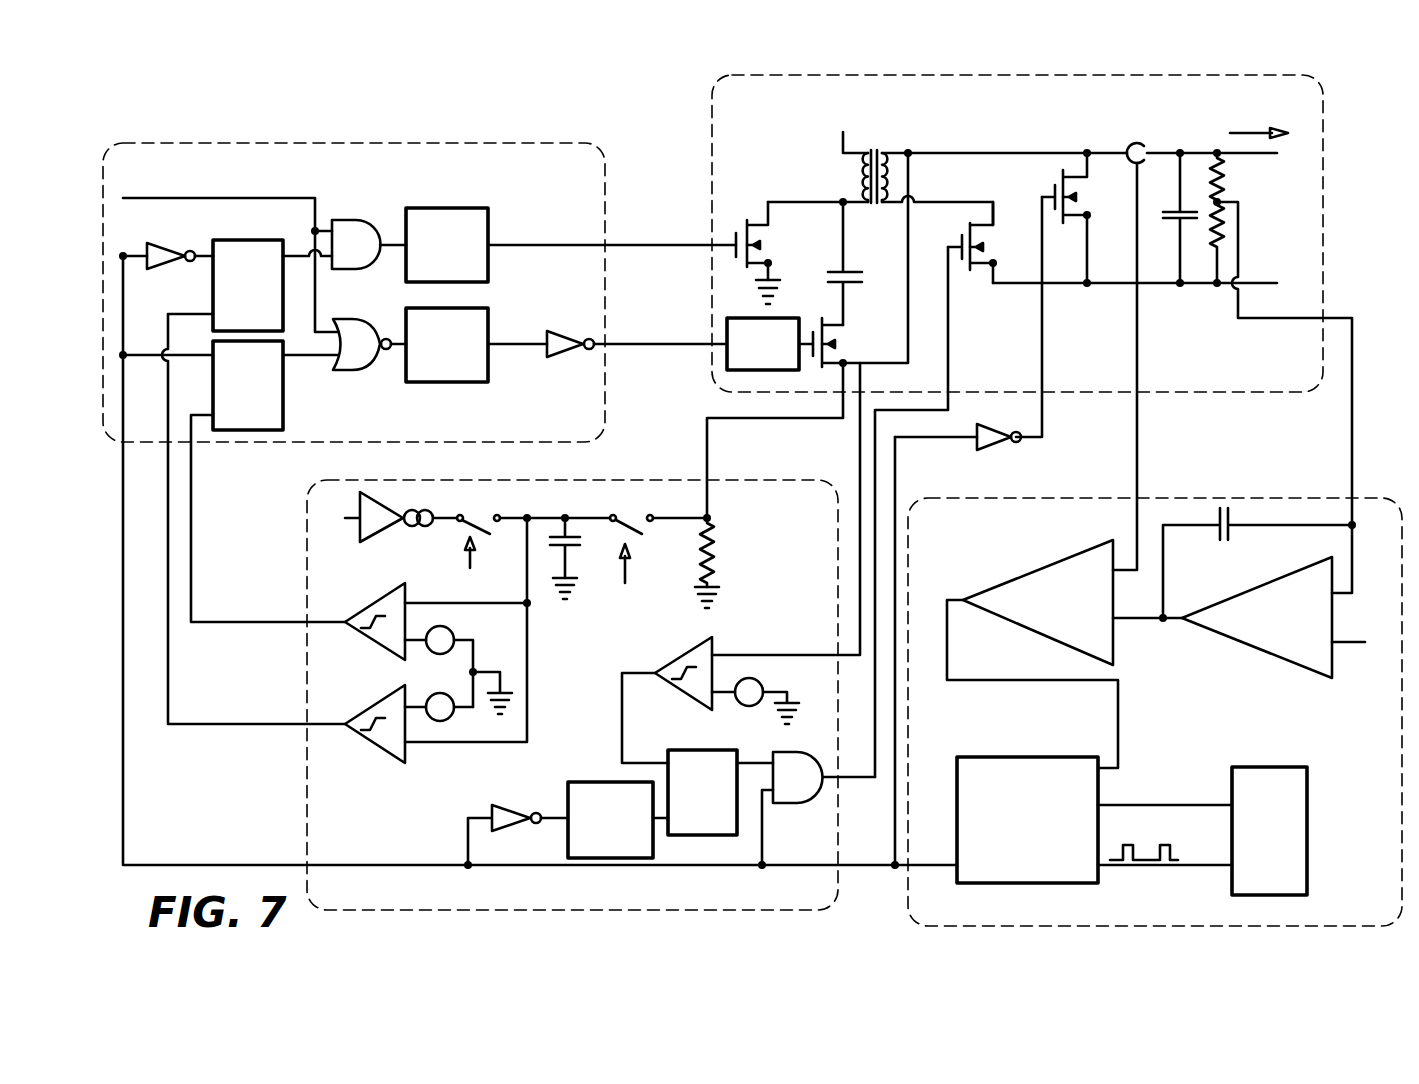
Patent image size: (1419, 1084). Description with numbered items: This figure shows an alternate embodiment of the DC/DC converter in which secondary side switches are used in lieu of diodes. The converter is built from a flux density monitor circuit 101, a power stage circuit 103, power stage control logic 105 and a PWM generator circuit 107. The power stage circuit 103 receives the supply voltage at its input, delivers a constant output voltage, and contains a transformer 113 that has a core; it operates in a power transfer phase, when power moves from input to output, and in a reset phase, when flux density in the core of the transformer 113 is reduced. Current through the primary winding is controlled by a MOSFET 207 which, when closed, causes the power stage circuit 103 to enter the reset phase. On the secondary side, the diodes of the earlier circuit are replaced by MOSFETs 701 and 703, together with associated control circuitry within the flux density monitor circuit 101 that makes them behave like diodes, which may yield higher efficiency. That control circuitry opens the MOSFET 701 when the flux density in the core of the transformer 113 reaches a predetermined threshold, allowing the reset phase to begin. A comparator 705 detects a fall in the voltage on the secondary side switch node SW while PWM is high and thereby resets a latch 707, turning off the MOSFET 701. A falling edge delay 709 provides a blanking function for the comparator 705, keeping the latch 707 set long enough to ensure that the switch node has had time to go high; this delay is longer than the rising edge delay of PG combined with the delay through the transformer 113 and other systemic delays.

The flux density monitor circuit 101 is at (684, 480).
The power stage circuit 103 is at (1270, 393).
The power stage control logic 105 is at (317, 444).
The PWM generator circuit 107 is at (1262, 498).
The transformer 113 is at (875, 153).
The MOSFET 207 is at (845, 360).
The MOSFET 701 is at (981, 268).
The MOSFET 703 is at (1080, 170).
The comparator 705 is at (684, 660).
The latch 707 is at (716, 836).
The falling edge delay 709 is at (598, 782).